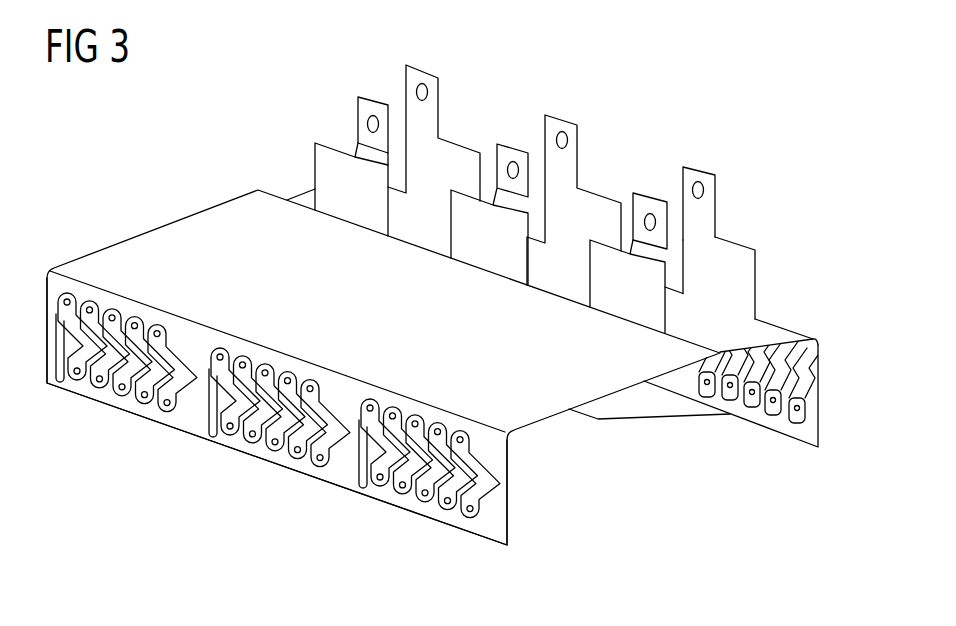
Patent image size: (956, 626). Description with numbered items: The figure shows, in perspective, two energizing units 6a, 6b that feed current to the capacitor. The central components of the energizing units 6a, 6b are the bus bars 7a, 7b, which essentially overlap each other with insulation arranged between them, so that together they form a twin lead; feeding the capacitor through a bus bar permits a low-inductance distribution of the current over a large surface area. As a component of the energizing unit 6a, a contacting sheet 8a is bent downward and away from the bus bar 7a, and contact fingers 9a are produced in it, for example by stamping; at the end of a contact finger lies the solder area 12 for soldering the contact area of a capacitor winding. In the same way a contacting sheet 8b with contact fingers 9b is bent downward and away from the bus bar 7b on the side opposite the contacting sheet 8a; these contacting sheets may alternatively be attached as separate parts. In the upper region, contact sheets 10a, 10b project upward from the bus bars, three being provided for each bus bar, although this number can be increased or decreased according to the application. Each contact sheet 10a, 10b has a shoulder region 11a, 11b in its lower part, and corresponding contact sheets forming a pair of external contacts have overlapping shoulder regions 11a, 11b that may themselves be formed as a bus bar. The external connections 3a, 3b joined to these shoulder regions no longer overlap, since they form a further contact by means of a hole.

The external connection 3a is at (637, 200).
The external connection 3b is at (692, 175).
The energizing unit 6a is at (76, 278).
The energizing unit 6b is at (805, 328).
The bus bar 7a is at (528, 415).
The bus bar 7b is at (615, 407).
The contacting sheet 8a is at (497, 522).
The contacting sheet 8b is at (812, 428).
The contact fingers 9a is at (278, 405).
The contact fingers 9b is at (803, 368).
The contact sheet 10a is at (317, 156).
The contact sheet 10b is at (746, 216).
The shoulder region 11a is at (327, 170).
The shoulder region 11b is at (736, 272).
The solder area 12 is at (362, 404).